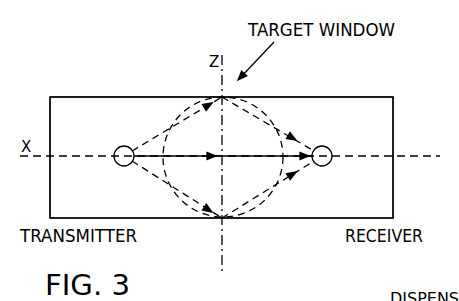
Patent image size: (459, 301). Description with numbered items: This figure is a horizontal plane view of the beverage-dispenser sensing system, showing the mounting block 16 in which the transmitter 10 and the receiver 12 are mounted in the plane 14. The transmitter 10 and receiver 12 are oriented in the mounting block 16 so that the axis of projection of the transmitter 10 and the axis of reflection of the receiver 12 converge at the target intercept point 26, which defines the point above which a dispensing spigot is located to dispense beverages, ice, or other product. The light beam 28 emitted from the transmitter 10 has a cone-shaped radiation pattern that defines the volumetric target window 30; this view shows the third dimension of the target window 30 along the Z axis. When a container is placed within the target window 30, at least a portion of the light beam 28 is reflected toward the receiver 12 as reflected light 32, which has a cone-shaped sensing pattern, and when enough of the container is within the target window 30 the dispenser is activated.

The transmitter 10 is at (116, 148).
The receiver 12 is at (332, 161).
The plane 14 is at (370, 133).
The mounting block 16 is at (411, 79).
The target intercept point 26 is at (225, 160).
The light beam 28 is at (147, 148).
The volumetric target window 30 is at (238, 194).
The reflected light 32 is at (293, 145).